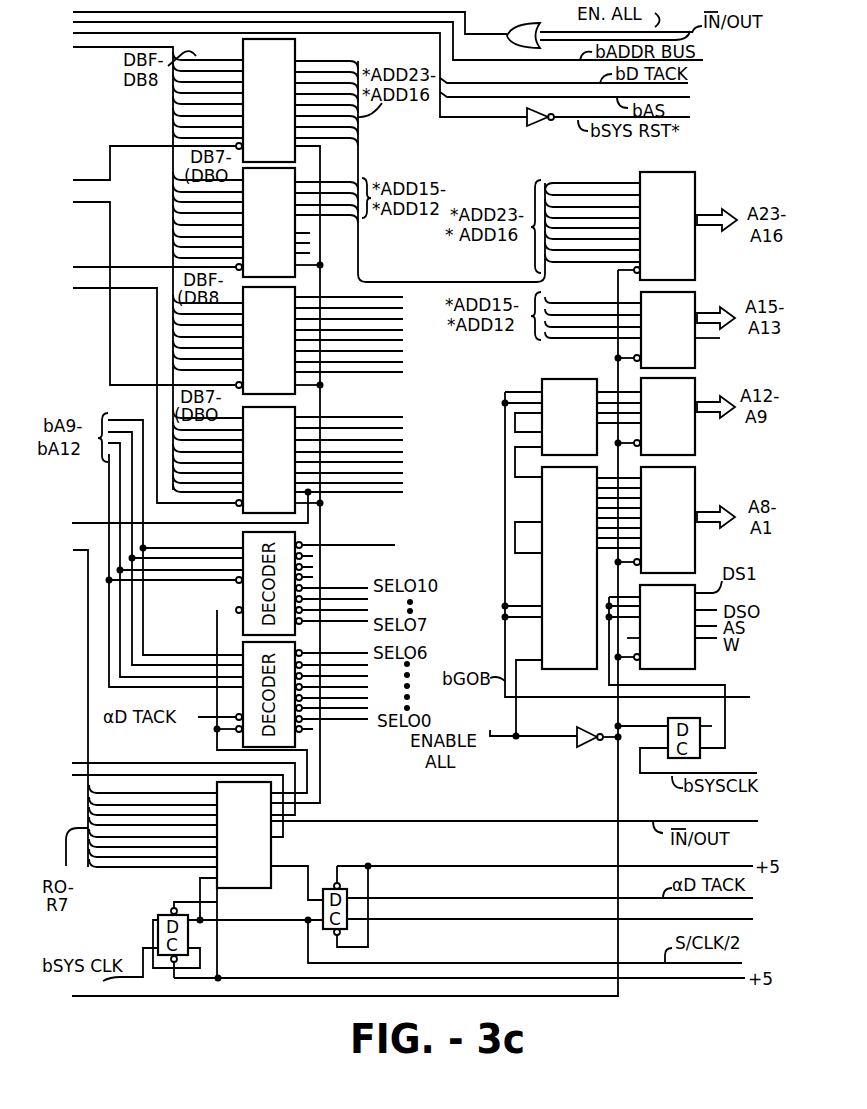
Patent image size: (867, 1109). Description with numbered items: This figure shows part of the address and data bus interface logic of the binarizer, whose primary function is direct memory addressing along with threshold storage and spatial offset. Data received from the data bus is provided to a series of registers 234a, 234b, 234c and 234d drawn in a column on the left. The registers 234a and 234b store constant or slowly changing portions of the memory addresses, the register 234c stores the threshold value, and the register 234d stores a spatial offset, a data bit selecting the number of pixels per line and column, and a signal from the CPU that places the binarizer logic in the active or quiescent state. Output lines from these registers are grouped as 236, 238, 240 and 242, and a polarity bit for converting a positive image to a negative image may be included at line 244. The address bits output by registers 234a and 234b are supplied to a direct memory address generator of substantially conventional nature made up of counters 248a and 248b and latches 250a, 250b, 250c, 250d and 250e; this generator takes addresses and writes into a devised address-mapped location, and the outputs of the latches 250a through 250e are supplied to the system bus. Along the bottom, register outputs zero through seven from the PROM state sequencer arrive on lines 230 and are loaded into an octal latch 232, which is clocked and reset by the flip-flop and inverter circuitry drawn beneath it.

The lines 230 is at (88, 636).
The octal latch 232 is at (479, 880).
The register 234a is at (215, 421).
The register 234b is at (215, 222).
The register 234c is at (198, 298).
The register 234d is at (198, 400).
The address lines 236 is at (405, 293).
The address lines 238 is at (405, 413).
The control line 240 is at (400, 483).
The control line 242 is at (390, 492).
The line 244 is at (393, 470).
The counter 248a is at (572, 428).
The counter 248b is at (572, 603).
The latch 250a is at (677, 226).
The latch 250b is at (675, 330).
The latch 250c is at (675, 416).
The latch 250d is at (675, 520).
The latch 250e is at (666, 664).